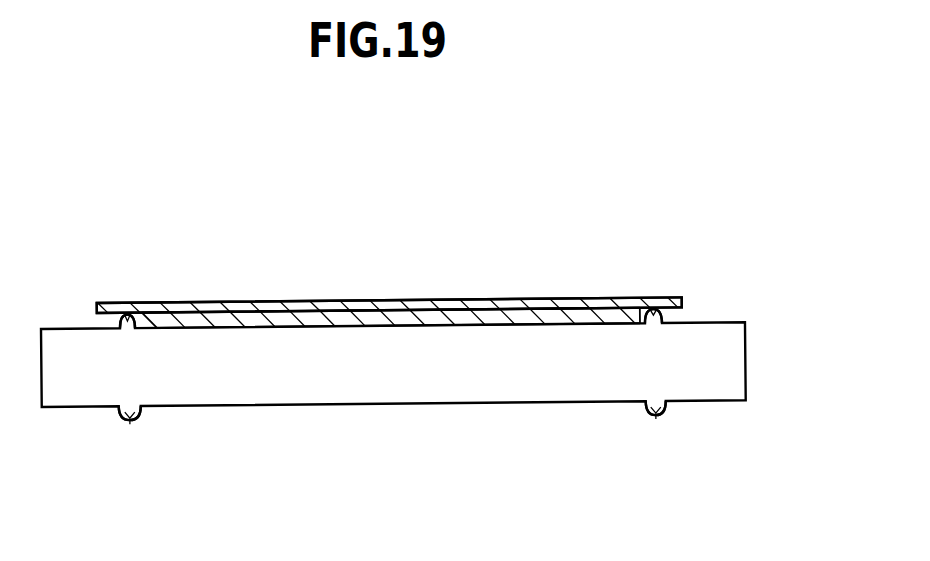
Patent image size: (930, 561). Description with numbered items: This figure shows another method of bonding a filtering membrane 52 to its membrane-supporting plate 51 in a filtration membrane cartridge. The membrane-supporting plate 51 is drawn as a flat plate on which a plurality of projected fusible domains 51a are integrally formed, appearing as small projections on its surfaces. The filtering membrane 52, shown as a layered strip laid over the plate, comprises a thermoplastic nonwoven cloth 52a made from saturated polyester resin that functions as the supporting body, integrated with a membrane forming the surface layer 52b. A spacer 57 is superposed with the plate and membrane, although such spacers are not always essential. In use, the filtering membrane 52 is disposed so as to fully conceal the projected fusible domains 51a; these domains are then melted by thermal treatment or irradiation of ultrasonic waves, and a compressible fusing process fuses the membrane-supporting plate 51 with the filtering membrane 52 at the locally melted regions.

The membrane-supporting plate 51 is at (725, 365).
The projected fusible domains 51a is at (657, 300).
The filtering membrane 52 is at (270, 301).
The thermoplastic nonwoven cloth 52a is at (438, 302).
The surface layer 52b is at (380, 300).
The spacer 57 is at (592, 313).